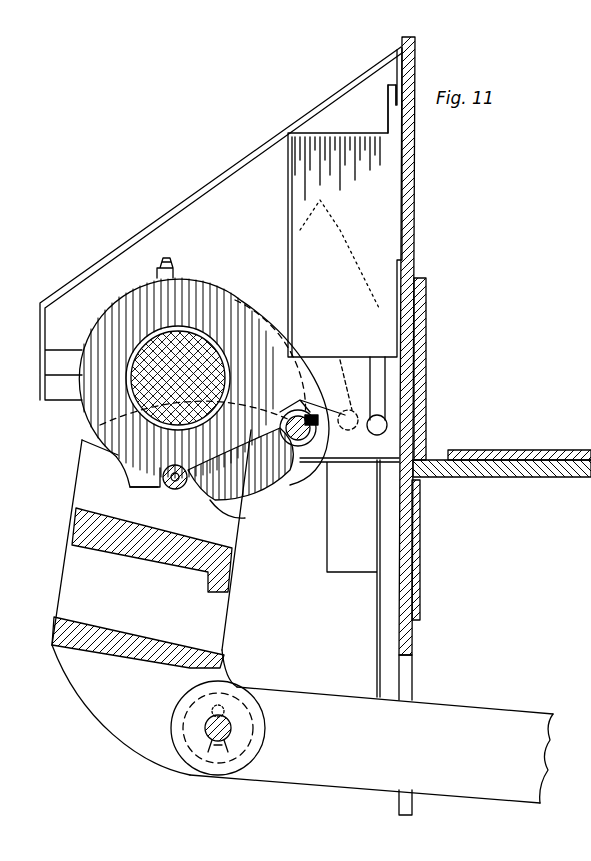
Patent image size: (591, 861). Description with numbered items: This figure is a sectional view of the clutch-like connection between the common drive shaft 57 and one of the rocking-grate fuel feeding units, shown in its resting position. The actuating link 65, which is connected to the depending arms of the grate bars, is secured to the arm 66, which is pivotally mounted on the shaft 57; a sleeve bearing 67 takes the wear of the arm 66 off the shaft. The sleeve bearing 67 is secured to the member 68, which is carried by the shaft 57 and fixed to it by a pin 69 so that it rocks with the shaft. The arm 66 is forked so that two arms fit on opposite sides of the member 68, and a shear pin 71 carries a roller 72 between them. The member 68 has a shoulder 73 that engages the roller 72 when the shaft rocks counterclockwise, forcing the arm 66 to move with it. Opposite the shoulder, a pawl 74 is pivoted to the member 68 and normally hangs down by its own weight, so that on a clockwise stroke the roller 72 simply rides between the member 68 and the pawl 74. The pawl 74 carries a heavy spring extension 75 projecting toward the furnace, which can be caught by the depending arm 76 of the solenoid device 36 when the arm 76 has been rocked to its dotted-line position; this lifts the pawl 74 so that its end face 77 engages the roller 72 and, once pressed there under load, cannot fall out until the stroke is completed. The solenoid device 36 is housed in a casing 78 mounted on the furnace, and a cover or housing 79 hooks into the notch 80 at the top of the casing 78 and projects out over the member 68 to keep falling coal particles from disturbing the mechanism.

The solenoid device 36 is at (380, 240).
The drive shaft 57 is at (182, 335).
The actuating link 65 is at (456, 703).
The arm 66 is at (74, 662).
The sleeve bearing 67 is at (110, 397).
The member 68 is at (130, 305).
The pin 69 is at (238, 295).
The shear pin 71 is at (188, 490).
The roller 72 is at (172, 492).
The shoulder 73 is at (160, 490).
The pawl 74 is at (258, 492).
The spring extension 75 is at (303, 447).
The depending arm 76 is at (396, 404).
The end face 77 is at (238, 530).
The casing 78 is at (345, 142).
The cover or housing 79 is at (229, 174).
The notch 80 is at (395, 103).